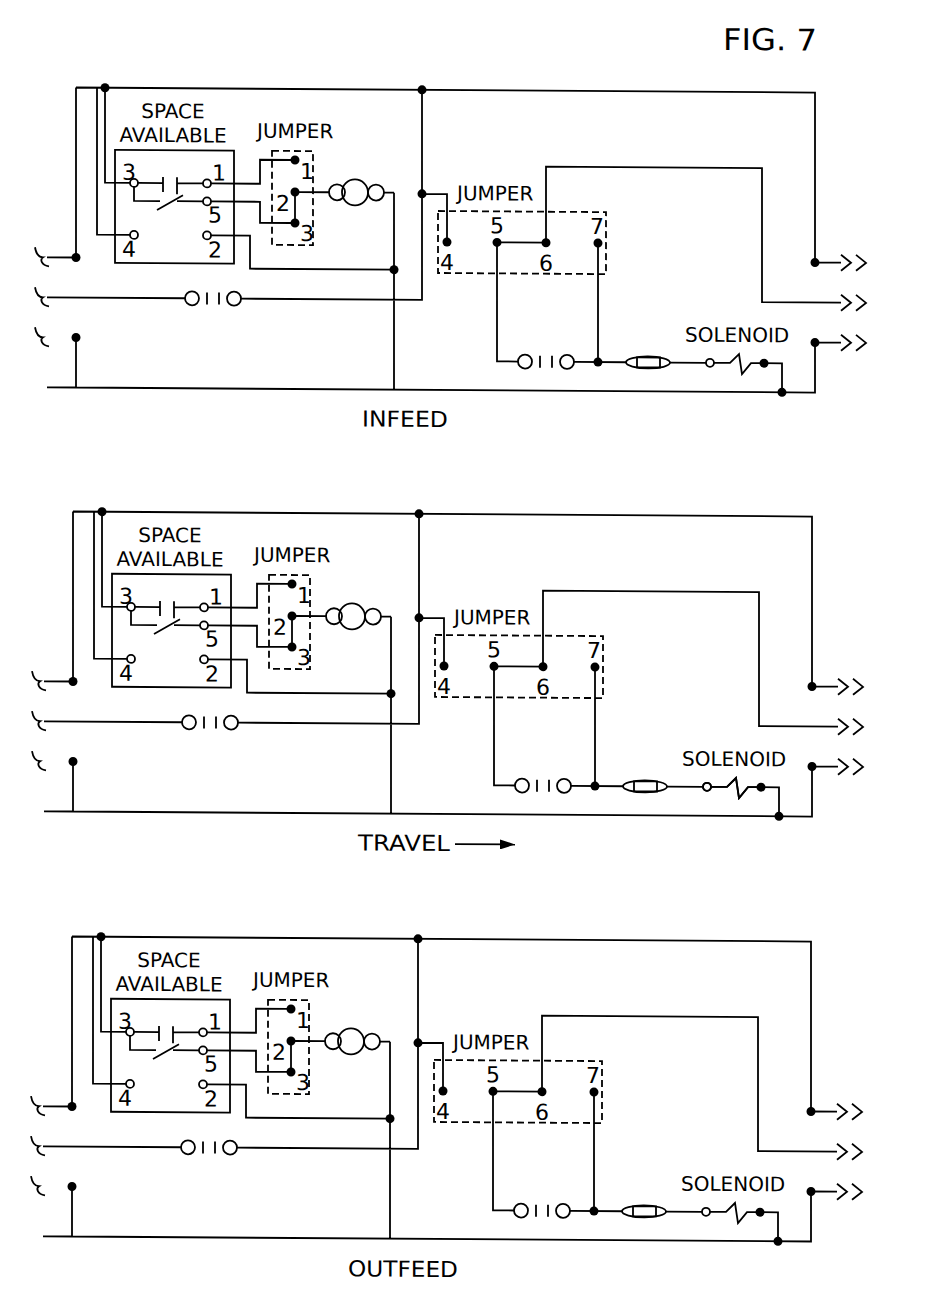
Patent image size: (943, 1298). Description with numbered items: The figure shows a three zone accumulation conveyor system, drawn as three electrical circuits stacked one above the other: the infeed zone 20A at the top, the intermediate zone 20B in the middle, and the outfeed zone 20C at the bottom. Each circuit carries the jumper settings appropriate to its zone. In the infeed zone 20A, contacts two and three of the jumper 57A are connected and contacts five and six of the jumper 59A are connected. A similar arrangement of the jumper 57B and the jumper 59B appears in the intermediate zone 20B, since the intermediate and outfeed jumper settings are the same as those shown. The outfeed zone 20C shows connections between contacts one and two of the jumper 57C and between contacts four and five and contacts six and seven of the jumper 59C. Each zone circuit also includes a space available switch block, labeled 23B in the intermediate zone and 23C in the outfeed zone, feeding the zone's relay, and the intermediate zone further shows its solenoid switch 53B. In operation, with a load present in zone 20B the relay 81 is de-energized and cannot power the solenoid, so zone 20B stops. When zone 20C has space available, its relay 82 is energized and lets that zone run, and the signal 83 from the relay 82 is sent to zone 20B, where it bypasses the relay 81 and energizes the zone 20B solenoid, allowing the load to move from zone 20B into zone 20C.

The infeed zone 20A is at (450, 205).
The intermediate zone 20B is at (447, 650).
The outfeed zone 20C is at (446, 1055).
The space available sensor switch 23B is at (171, 569).
The space available sensor switch 23C is at (170, 994).
The jumper 57A is at (294, 113).
The jumper 57B is at (291, 563).
The jumper 57C is at (290, 988).
The jumper 59A is at (483, 170).
The jumper 59B is at (519, 585).
The jumper 59C is at (518, 1010).
The relay 81 is at (348, 550).
The relay 82 is at (347, 975).
The signal 83 is at (836, 648).
The solenoid valve switch 53B is at (713, 821).